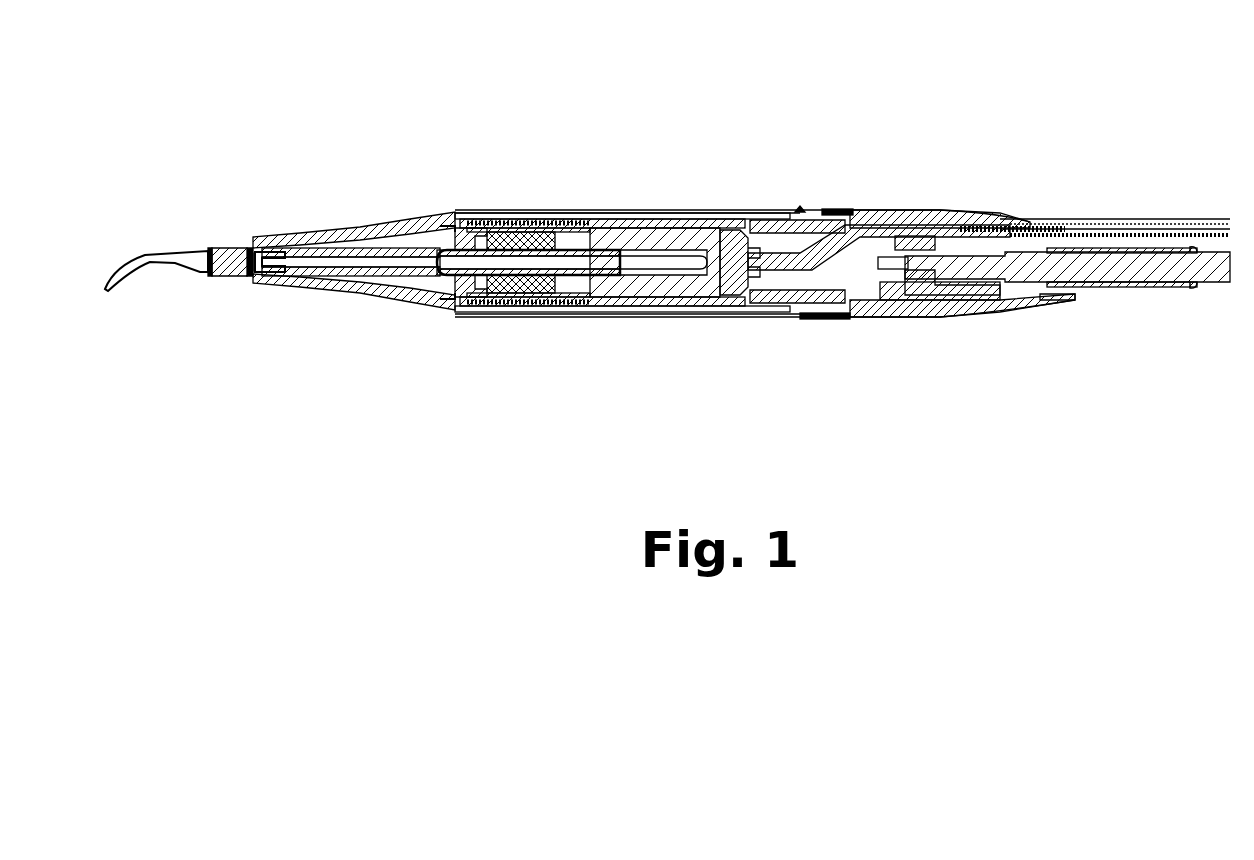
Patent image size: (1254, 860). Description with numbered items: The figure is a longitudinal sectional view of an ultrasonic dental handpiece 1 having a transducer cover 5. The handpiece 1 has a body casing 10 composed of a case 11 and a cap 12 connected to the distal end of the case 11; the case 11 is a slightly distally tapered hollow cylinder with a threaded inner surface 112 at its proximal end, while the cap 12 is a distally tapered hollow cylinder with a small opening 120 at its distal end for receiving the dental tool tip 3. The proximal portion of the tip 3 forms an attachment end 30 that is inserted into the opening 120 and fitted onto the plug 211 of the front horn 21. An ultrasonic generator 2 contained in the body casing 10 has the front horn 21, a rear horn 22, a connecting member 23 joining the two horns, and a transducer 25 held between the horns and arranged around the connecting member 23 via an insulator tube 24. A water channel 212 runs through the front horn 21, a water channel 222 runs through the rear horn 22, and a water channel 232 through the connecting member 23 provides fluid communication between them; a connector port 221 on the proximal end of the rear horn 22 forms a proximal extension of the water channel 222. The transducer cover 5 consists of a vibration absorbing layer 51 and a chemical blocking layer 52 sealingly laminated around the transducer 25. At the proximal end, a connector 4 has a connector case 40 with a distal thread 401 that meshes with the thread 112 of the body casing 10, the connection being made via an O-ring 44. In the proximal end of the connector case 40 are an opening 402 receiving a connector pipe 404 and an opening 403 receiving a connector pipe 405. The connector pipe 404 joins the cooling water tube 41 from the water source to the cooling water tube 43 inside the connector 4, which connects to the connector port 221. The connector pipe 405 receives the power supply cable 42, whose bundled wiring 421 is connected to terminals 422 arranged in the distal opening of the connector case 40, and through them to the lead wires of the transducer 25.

The ultrasonic handpiece 1 is at (730, 106).
The ultrasonic generator 2 is at (446, 226).
The dental tool tip 3 is at (180, 246).
The connector 4 is at (905, 203).
The transducer cover 5 is at (565, 205).
The body casing 10 is at (706, 325).
The case 11 is at (672, 222).
The cap 12 is at (385, 234).
The front horn 21 is at (398, 232).
The rear horn 22 is at (633, 240).
The connecting member 23 is at (505, 275).
The insulator tube 24 is at (540, 228).
The transducer 25 is at (498, 224).
The attachment end 30 is at (274, 248).
The connector case 40 is at (877, 209).
The cooling water tube 41 is at (1112, 220).
The power supply cable 42 is at (1113, 272).
The cooling water tube 43 is at (855, 285).
The O-ring 44 is at (800, 320).
The vibration absorbing layer 51 is at (548, 222).
The chemical blocking layer 52 is at (518, 226).
The threaded inner surface 112 is at (826, 209).
The small opening 120 is at (233, 245).
The plug 211 is at (270, 280).
The water channel 212 is at (352, 278).
The connector port 221 is at (752, 292).
The water channel 222 is at (655, 265).
The water channel 232 is at (570, 293).
The thread 401 is at (837, 209).
The opening 402 is at (1022, 220).
The opening 403 is at (1074, 304).
The connector pipe 404 is at (1058, 220).
The connector pipe 405 is at (1162, 290).
The wiring 421 is at (930, 302).
The terminals 422 is at (884, 272).